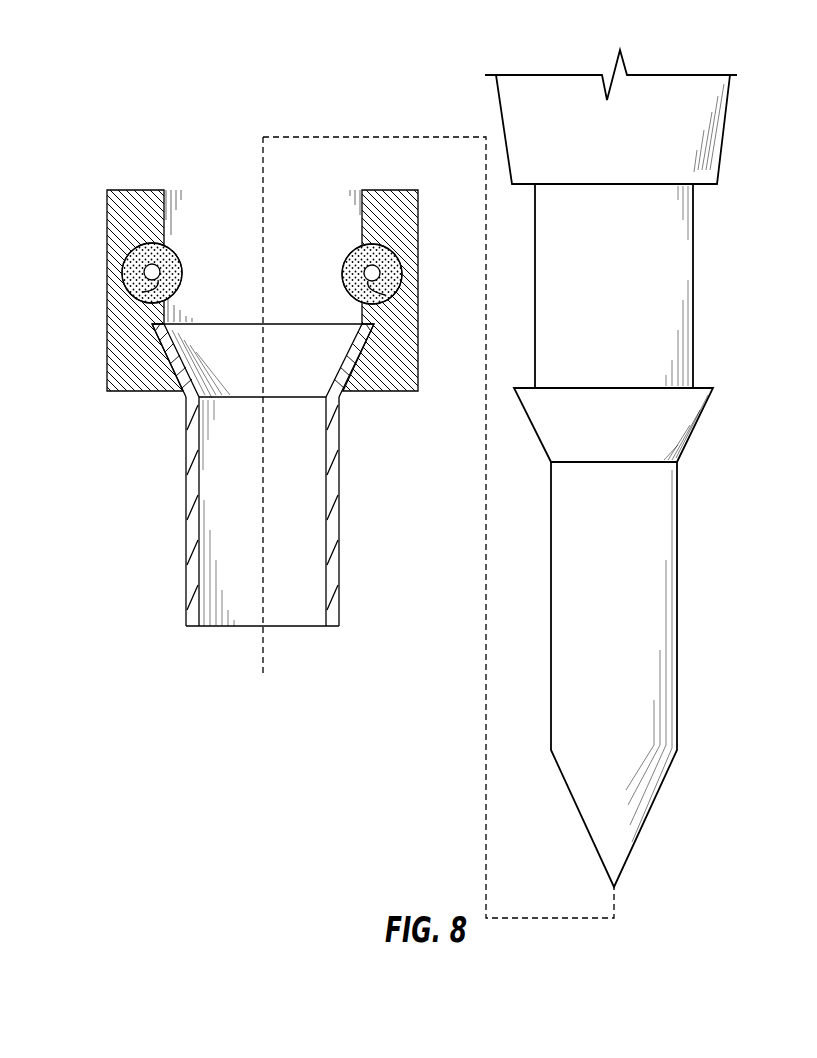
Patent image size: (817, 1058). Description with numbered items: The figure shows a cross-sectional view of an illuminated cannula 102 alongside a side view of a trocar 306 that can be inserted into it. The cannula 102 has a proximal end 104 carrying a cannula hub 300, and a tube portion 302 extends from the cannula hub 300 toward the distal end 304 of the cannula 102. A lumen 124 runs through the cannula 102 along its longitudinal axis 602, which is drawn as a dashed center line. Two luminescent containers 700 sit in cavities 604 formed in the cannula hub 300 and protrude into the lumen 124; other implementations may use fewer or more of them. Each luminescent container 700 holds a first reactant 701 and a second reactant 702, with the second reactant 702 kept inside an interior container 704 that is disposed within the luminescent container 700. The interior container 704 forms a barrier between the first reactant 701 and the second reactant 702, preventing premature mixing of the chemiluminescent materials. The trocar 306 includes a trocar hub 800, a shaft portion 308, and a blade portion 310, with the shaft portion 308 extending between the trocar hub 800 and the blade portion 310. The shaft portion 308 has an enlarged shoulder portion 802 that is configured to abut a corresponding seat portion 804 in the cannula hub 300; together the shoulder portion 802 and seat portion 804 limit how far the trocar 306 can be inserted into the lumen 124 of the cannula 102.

The cannula 102 is at (66, 137).
The proximal end 104 is at (86, 222).
The lumen 124 is at (235, 618).
The cannula hub 300 is at (107, 352).
The tube portion 302 is at (339, 512).
The distal end 304 is at (348, 598).
The trocar 306 is at (731, 133).
The shaft portion 308 is at (702, 302).
The blade portion 310 is at (655, 828).
The longitudinal axis 602 is at (263, 653).
The cavities 604 is at (158, 244).
The luminescent containers 700 is at (123, 247).
The first reactant 701 is at (162, 255).
The second reactant 702 is at (147, 270).
The interior container 704 is at (143, 292).
The trocar hub 800 is at (733, 84).
The shoulder portion 802 is at (697, 425).
The seat portion 804 is at (183, 378).